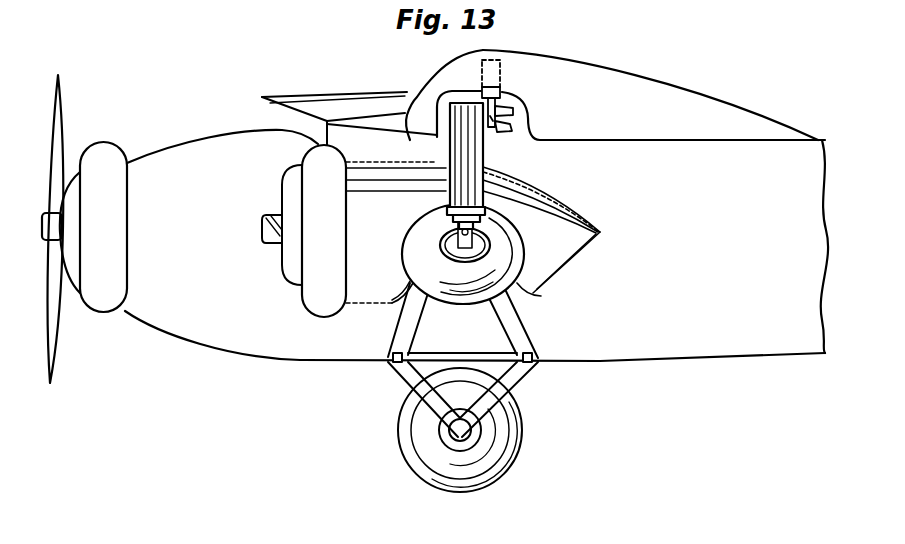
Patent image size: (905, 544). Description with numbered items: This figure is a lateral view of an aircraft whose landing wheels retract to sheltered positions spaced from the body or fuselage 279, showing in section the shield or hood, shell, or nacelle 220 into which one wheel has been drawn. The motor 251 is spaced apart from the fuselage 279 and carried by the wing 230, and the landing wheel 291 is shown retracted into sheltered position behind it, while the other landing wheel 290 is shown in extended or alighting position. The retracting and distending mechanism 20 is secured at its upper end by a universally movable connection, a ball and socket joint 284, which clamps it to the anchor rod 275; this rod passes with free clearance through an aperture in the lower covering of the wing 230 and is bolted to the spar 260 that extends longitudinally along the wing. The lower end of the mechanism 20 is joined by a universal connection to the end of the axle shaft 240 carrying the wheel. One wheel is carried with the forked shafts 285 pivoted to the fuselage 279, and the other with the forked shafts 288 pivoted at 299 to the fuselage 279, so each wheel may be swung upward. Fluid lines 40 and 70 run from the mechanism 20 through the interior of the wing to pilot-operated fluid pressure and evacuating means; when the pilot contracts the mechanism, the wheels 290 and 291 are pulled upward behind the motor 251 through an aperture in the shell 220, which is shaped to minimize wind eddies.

The retracting and distending mechanism 20 is at (478, 158).
The fluid line 40 is at (513, 113).
The fluid line 70 is at (510, 128).
The hood, shell, or nacelle 220 is at (537, 187).
The wing 230 is at (607, 83).
The axle shaft 240 is at (472, 240).
The motor 251 is at (308, 295).
The spar 260 is at (487, 87).
The anchor rod 275 is at (500, 105).
The body or fuselage 279 is at (217, 338).
The ball and socket joint 284 is at (503, 120).
The forked shafts 285 is at (412, 382).
The forked shafts 288 is at (505, 318).
The landing wheel 290 is at (525, 432).
The landing wheel 291 is at (541, 296).
The pivot 299 is at (520, 352).